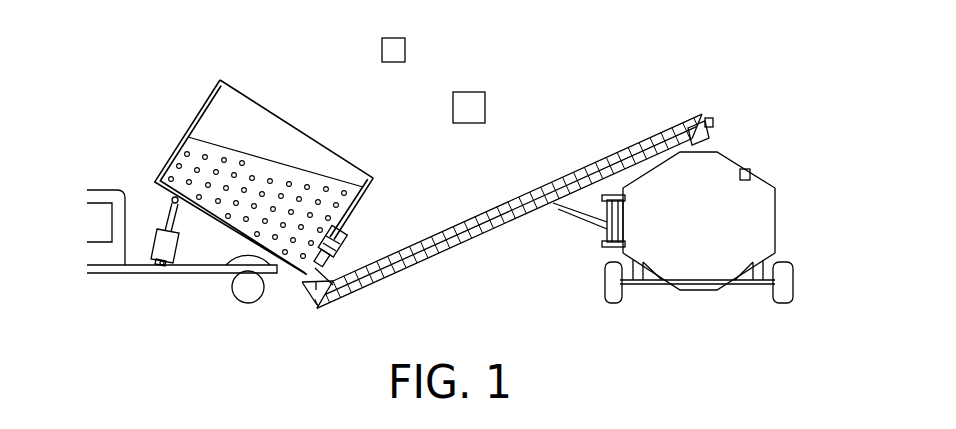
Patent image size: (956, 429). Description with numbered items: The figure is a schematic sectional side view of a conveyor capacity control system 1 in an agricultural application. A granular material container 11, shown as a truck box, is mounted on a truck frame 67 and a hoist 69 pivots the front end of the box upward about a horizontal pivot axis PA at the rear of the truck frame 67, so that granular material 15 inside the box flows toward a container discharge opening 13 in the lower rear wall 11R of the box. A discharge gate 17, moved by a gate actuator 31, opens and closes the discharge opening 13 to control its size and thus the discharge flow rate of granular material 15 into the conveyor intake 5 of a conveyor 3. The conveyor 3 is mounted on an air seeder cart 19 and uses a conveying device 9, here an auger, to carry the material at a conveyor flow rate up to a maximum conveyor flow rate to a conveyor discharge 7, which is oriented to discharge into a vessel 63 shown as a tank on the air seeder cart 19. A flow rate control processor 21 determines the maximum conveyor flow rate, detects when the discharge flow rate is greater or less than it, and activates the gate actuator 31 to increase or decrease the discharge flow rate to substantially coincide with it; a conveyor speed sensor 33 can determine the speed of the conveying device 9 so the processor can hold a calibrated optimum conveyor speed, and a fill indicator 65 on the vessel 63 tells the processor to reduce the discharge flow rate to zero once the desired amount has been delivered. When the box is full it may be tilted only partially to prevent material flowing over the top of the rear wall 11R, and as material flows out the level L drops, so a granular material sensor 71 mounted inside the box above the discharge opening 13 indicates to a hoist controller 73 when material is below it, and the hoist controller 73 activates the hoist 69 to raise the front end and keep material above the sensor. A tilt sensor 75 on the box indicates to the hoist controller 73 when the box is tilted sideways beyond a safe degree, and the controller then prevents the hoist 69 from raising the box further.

The conveyor capacity control system 1 is at (570, 64).
The conveyor 3 is at (519, 209).
The conveyor intake 5 is at (302, 287).
The conveyor discharge 7 is at (712, 134).
The conveying device 9 is at (508, 199).
The granular material container 11 is at (310, 162).
The rear wall 11R is at (366, 191).
The container discharge opening 13 is at (330, 300).
The granular material 15 is at (289, 165).
The discharge gate 17 is at (334, 266).
The air seeder cart 19 is at (725, 217).
The flow rate control processor 21 is at (468, 92).
The gate actuator 31 is at (348, 246).
The conveyor speed sensor 33 is at (712, 120).
The vessel 63 is at (748, 169).
The fill indicator 65 is at (752, 173).
The truck frame 67 is at (203, 275).
The hoist 69 is at (152, 246).
The granular material sensor 71 is at (385, 201).
The tilt sensor 75 is at (324, 276).
The hoist controller 73 is at (405, 50).
The level L is at (245, 152).
The pivot axis PA is at (240, 258).